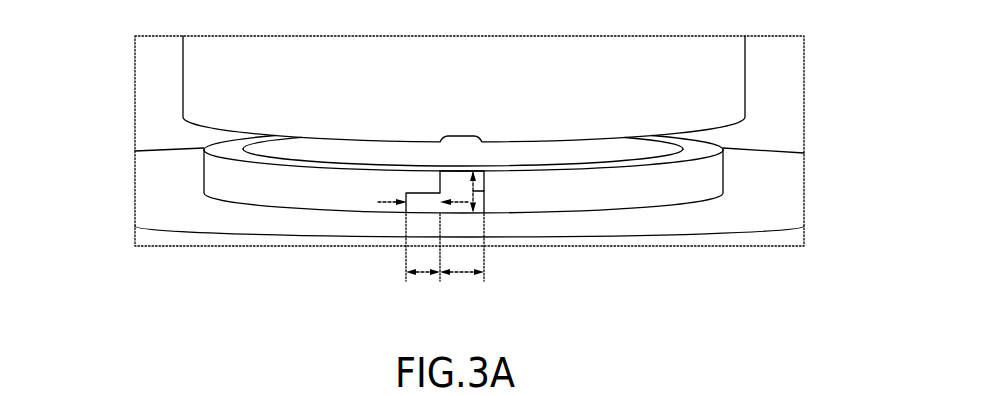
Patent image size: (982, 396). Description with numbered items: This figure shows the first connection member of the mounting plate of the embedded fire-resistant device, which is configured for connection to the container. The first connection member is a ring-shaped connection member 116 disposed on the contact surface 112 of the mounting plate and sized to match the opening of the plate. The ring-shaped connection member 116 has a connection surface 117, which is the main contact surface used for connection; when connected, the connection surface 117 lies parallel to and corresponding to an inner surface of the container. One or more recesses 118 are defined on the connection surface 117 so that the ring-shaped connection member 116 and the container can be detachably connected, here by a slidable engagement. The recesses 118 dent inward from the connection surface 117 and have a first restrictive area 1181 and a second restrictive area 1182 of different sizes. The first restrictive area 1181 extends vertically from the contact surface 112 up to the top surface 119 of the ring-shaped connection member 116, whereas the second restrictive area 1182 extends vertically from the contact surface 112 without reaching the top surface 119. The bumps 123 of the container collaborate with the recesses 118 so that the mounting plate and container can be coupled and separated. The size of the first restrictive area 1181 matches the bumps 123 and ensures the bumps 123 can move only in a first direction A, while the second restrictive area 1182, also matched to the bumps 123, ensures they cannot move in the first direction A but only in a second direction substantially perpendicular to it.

The ring-shaped connection member 116 is at (183, 131).
The bumps 123 is at (462, 134).
The recesses 118 is at (423, 197).
The first direction A is at (484, 191).
The top surface 119 is at (708, 148).
The connection surface 117 is at (623, 200).
The contact surface 112 is at (763, 182).
The second restrictive area 1182 is at (425, 275).
The first restrictive area 1181 is at (462, 275).